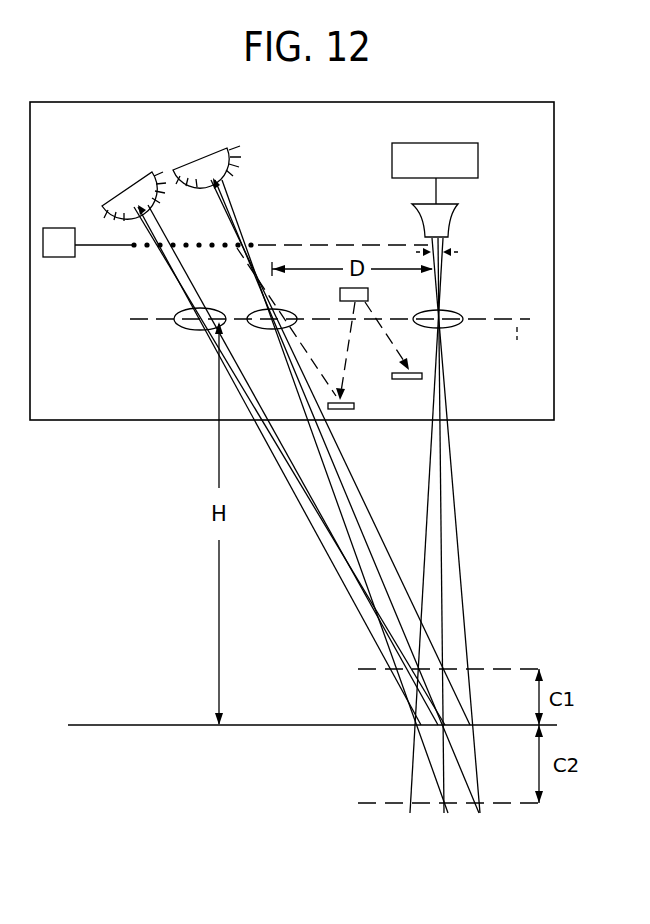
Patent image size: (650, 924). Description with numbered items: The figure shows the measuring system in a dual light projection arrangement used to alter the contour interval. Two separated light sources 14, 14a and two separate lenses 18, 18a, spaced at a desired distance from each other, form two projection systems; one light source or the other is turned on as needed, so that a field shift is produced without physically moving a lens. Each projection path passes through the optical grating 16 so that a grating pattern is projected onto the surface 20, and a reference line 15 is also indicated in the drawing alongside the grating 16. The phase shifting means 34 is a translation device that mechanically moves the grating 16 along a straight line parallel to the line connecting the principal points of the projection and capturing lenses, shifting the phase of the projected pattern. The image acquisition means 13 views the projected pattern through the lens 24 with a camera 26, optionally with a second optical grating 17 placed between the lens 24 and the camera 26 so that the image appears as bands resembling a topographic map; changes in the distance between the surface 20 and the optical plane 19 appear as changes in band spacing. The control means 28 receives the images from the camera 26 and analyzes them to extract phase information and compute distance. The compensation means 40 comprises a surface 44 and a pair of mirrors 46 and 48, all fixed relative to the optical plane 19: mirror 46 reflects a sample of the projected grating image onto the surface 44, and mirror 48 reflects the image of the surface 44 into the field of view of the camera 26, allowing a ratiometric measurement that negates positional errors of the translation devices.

The image acquisition means 13 is at (482, 294).
The light source 14 is at (228, 156).
The second light source 14a is at (128, 186).
The reference axis 15 is at (352, 240).
The optical grating 16 is at (253, 240).
The second optical grating 17 is at (462, 251).
The focusing lens 18 is at (266, 331).
The second lens 18a is at (186, 326).
The optical plane 19 is at (516, 341).
The surface 20 is at (158, 724).
The lens 24 is at (450, 328).
The camera 26 is at (448, 222).
The control means 28 is at (476, 158).
The phase shifting means 34 is at (58, 232).
The compensation means 40 is at (404, 438).
The surface 44 is at (340, 296).
The mirror 46 is at (341, 410).
The mirror 48 is at (405, 380).